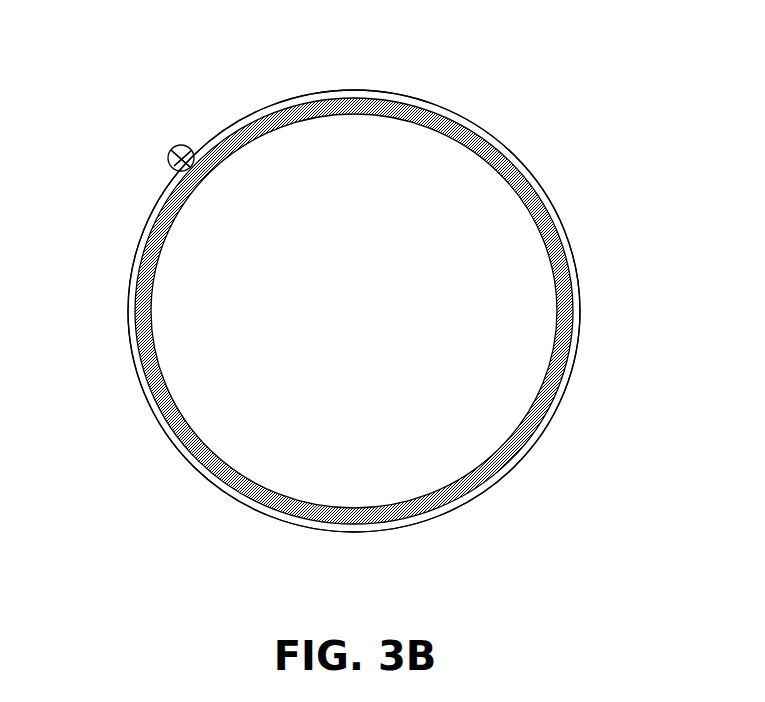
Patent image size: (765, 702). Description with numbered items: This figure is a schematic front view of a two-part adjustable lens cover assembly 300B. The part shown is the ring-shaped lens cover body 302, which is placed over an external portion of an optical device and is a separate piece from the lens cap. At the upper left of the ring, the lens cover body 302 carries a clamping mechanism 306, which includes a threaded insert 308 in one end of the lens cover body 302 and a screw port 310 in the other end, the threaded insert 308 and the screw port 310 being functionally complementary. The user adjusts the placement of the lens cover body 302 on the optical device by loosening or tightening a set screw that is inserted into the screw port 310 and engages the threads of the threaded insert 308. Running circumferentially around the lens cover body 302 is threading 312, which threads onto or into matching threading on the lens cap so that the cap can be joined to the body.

The two-part adjustable lens cover assembly 300B is at (145, 80).
The lens cover body 302 is at (553, 212).
The clamping mechanism 306 is at (166, 141).
The threaded insert 308 is at (192, 143).
The screw port 310 is at (165, 165).
The threading 312 is at (567, 275).